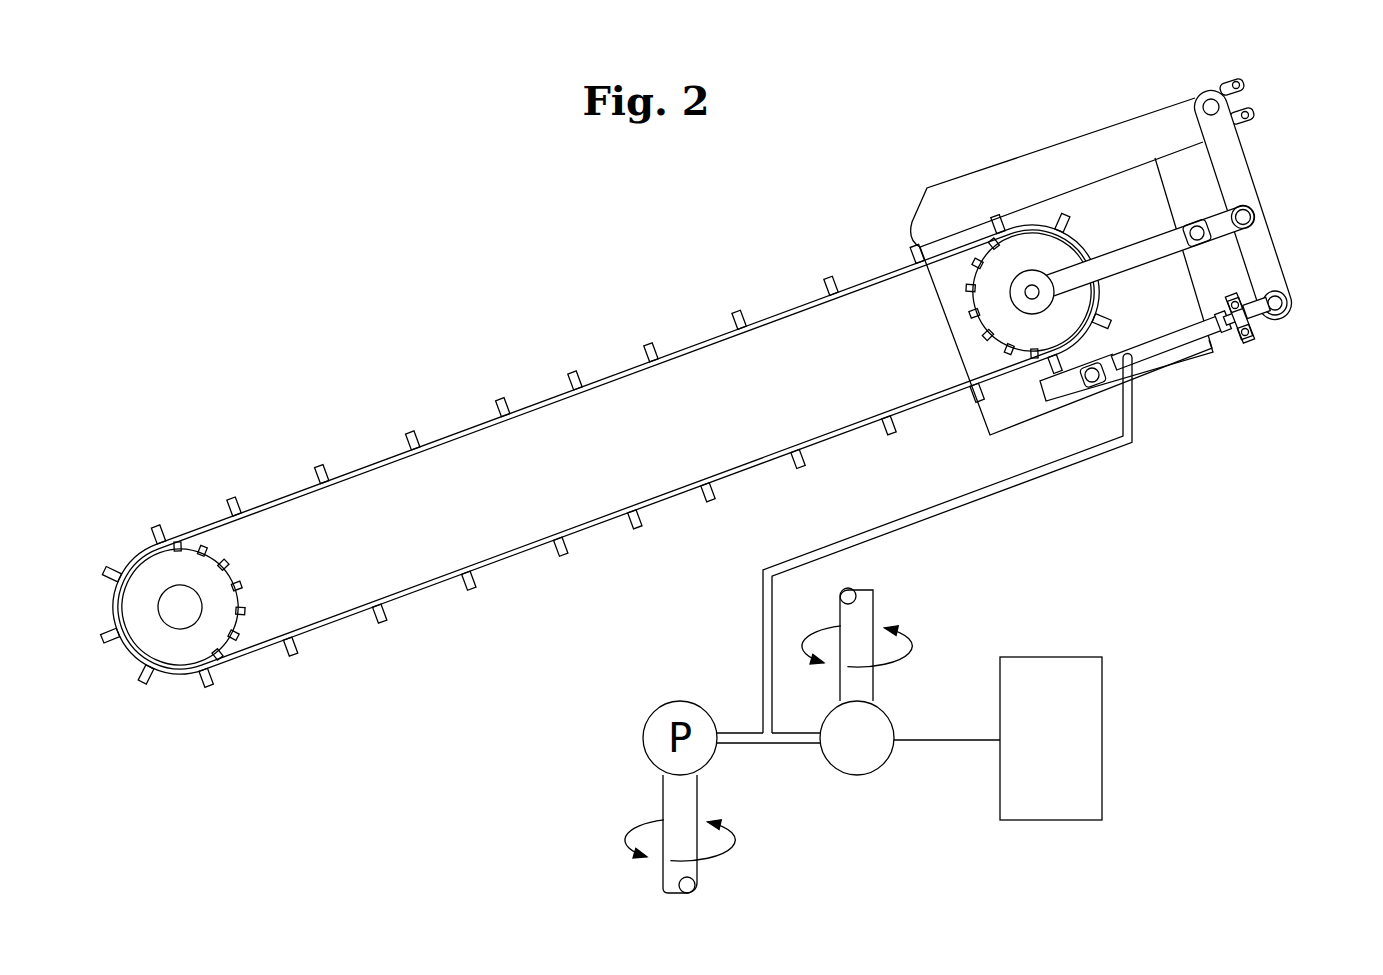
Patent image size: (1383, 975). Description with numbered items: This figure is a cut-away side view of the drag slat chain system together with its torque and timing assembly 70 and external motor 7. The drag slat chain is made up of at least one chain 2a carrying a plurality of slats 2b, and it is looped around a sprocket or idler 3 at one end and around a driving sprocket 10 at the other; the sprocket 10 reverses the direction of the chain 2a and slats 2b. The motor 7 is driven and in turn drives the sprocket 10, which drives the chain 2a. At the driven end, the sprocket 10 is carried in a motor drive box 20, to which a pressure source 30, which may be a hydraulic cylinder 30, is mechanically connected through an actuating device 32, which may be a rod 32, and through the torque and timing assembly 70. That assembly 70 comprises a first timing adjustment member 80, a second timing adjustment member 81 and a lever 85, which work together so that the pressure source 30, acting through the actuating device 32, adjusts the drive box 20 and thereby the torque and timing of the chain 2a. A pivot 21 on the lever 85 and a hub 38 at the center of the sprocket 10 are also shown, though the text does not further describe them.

The chain 2a is at (453, 432).
The slats 2b is at (578, 363).
The sprocket or idler 3 is at (185, 575).
The motor 7 is at (872, 745).
The sprocket 10 is at (1012, 243).
The motor drive box 20 is at (1128, 187).
The pivot hole 21 is at (1209, 100).
The pressure source 30 is at (1172, 347).
The actuating device 32 is at (1243, 338).
The hub 38 is at (1025, 290).
The timing and torque assembly 70 is at (1086, 255).
The first timing adjustment member 80 is at (1118, 260).
The second timing adjustment member 81 is at (1217, 215).
The lever 85 is at (1243, 195).